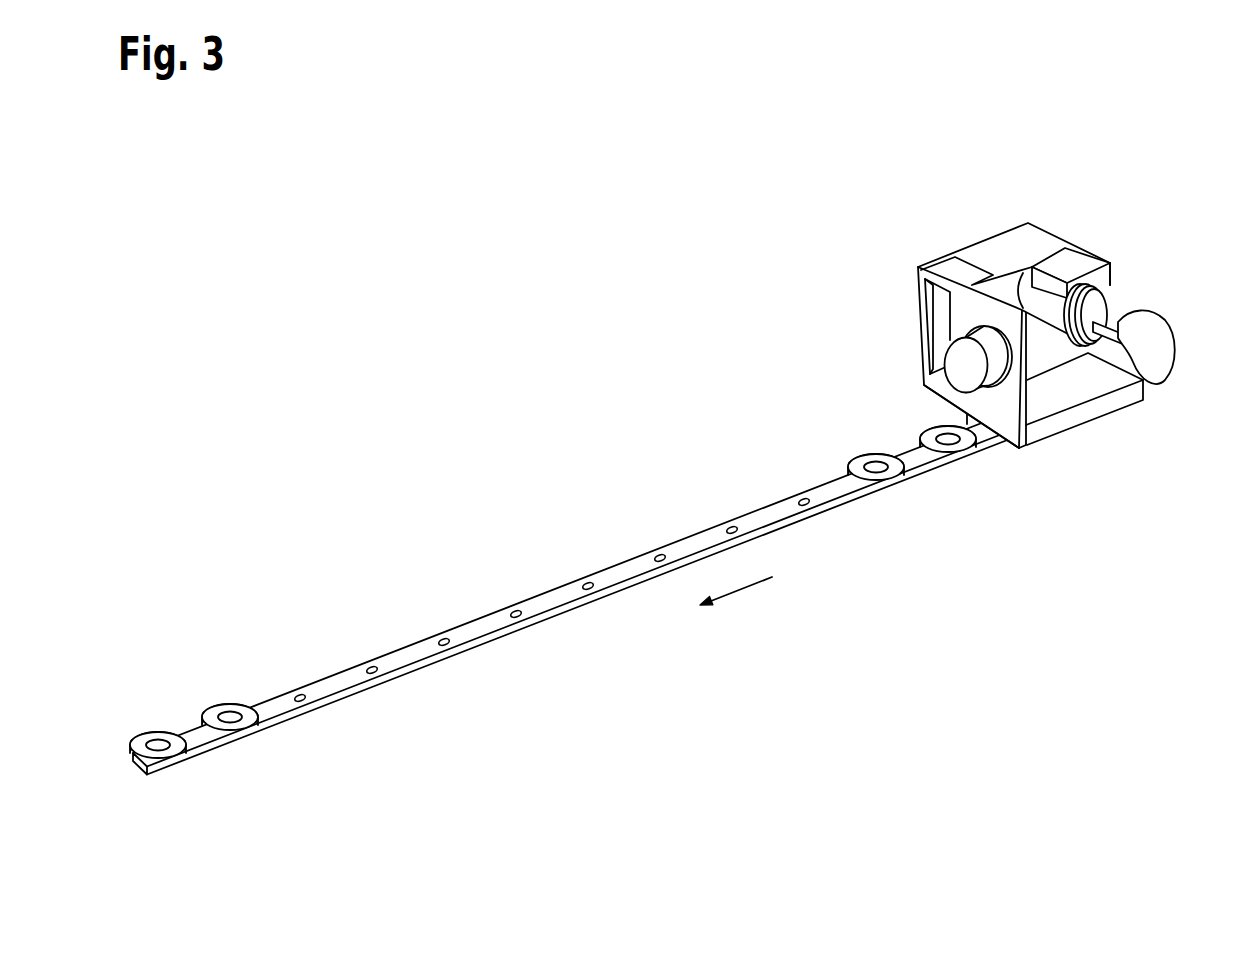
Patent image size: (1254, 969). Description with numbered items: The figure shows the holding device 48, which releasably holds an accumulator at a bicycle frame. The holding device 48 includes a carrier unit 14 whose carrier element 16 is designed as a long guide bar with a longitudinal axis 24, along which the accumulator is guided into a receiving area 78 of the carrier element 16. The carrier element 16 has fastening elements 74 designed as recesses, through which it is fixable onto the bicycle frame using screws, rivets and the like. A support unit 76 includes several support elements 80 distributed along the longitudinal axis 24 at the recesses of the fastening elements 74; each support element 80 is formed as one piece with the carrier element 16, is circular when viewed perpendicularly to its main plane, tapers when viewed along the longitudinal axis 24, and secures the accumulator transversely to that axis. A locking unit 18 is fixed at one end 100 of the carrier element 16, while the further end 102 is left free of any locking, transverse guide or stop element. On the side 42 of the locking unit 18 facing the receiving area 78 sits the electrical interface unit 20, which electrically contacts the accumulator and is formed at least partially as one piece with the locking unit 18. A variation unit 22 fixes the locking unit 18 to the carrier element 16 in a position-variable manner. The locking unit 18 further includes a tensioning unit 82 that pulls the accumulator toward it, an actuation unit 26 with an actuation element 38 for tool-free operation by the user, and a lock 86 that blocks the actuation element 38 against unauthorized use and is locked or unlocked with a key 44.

The carrier unit 14 is at (546, 639).
The carrier element 16 is at (687, 552).
The locking unit 18 is at (1039, 328).
The electrical interface unit 20 is at (995, 370).
The variation unit 22 is at (1122, 400).
The longitudinal axis 24 is at (752, 587).
The actuation unit 26 is at (996, 250).
The actuation element 38 is at (956, 268).
The side 42 is at (942, 325).
The key 44 is at (1155, 350).
The holding device 48 is at (869, 571).
The fastening elements 74 is at (298, 693).
The support unit 76 is at (178, 784).
The receiving area 78 is at (478, 558).
The support element 80 is at (140, 735).
The tensioning unit 82 is at (1030, 287).
The lock 86 is at (1108, 308).
The end 100 is at (126, 792).
The further end 102 is at (1034, 470).